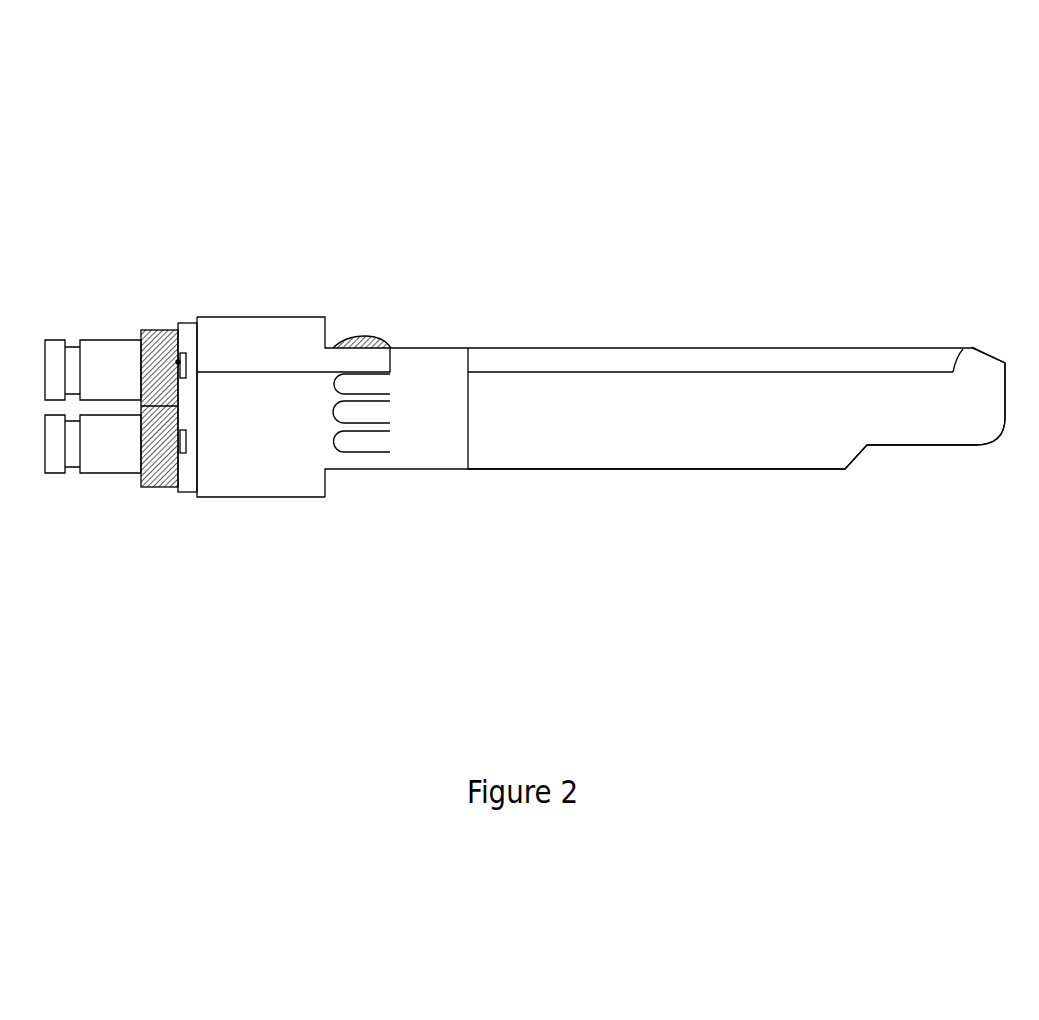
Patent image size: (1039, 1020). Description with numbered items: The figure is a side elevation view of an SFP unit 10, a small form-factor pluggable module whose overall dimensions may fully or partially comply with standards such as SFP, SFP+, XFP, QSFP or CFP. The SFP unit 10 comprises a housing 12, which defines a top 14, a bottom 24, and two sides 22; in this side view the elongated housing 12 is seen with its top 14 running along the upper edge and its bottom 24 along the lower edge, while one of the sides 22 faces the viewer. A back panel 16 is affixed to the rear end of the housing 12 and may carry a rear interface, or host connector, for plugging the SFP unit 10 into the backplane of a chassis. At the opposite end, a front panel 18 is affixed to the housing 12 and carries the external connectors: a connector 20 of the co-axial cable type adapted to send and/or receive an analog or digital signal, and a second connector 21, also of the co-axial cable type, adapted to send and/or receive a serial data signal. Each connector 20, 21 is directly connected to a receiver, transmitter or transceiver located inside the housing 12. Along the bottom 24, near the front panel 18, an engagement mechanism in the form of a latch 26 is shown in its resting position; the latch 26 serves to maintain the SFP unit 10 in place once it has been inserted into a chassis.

The SFP unit 10 is at (573, 83).
The housing 12 is at (750, 387).
The top 14 is at (565, 348).
The back panel 16 is at (1005, 400).
The front panel 18 is at (196, 318).
The connector 20 is at (121, 382).
The connector 21 is at (121, 457).
The sides 22 is at (572, 426).
The bottom 24 is at (667, 469).
The latch 26 is at (372, 478).